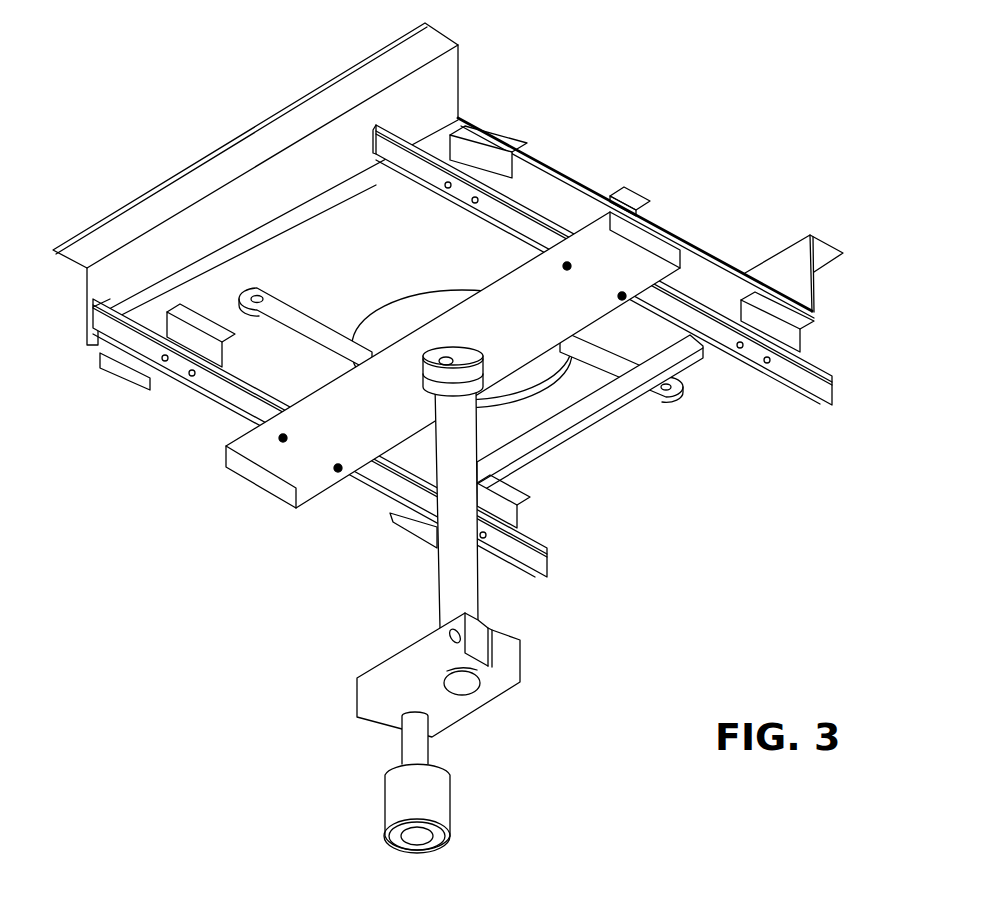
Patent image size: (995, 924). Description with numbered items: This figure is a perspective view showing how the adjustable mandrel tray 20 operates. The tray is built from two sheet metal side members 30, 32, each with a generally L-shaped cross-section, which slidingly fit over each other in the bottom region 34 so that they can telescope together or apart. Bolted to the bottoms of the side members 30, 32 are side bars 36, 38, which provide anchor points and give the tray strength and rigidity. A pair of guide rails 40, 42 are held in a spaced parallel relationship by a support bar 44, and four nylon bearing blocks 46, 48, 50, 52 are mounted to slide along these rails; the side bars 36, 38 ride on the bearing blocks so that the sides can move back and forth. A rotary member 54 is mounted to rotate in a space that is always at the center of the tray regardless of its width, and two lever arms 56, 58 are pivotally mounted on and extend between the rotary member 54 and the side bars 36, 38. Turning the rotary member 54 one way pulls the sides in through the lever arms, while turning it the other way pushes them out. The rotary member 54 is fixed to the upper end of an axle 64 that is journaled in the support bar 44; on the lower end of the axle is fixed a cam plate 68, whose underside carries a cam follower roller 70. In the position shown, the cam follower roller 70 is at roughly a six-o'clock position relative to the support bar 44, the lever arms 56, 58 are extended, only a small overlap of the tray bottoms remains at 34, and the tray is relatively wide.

The mandrel tray 20 is at (818, 232).
The side member 30 is at (458, 80).
The side member 32 is at (815, 298).
The bottom region 34 is at (640, 213).
The side bar 36 is at (125, 372).
The side bar 38 is at (703, 378).
The guide rail 40 is at (822, 390).
The guide rail 42 is at (534, 568).
The support bar 44 is at (273, 487).
The nylon bearing block 46 is at (512, 178).
The nylon bearing block 48 is at (803, 343).
The nylon bearing block 50 is at (222, 357).
The nylon bearing block 52 is at (517, 513).
The rotary member 54 is at (415, 290).
The lever arm 56 is at (322, 314).
The lever arm 58 is at (608, 350).
The axle 64 is at (440, 577).
The cam plate 68 is at (473, 708).
The cam follower roller 70 is at (450, 802).